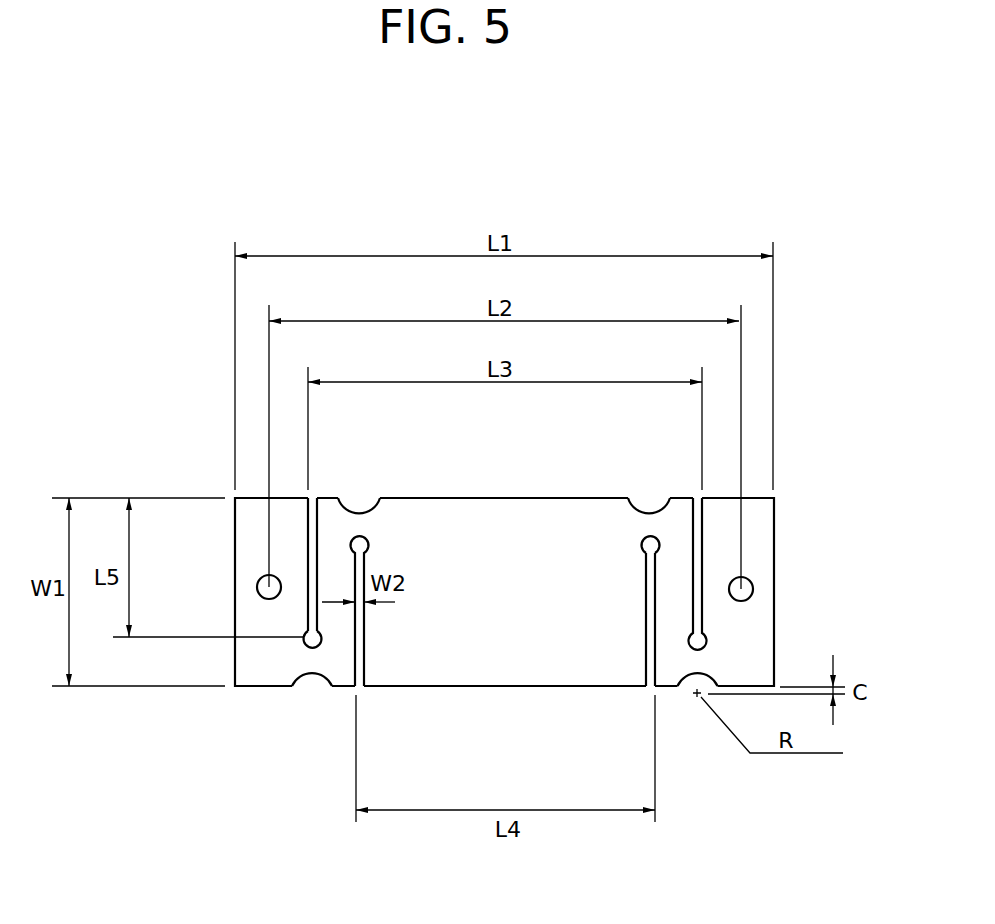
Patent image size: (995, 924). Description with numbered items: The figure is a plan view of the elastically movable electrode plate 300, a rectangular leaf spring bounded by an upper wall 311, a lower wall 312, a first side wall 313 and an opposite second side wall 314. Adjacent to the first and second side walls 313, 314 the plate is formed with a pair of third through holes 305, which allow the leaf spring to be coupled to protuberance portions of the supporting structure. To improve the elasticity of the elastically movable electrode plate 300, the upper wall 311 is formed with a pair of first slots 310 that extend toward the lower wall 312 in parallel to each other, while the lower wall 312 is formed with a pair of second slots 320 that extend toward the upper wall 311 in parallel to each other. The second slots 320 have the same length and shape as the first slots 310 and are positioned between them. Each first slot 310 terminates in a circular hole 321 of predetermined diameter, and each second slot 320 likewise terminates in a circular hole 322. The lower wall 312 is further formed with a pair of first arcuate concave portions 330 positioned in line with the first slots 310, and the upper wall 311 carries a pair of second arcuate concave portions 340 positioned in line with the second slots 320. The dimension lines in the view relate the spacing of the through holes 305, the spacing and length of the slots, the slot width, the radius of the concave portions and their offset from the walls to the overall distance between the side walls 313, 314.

The elastically movable electrode plate 300 is at (456, 179).
The third through holes 305 is at (266, 586).
The first slots 310 is at (317, 528).
The upper wall 311 is at (501, 497).
The lower wall 312 is at (447, 687).
The first side wall 313 is at (774, 540).
The second side wall 314 is at (235, 657).
The second slots 320 is at (648, 596).
The circular hole 321 is at (305, 636).
The circular hole 322 is at (648, 545).
The first arcuate concave portions 330 is at (310, 676).
The second arcuate concave portions 340 is at (340, 507).